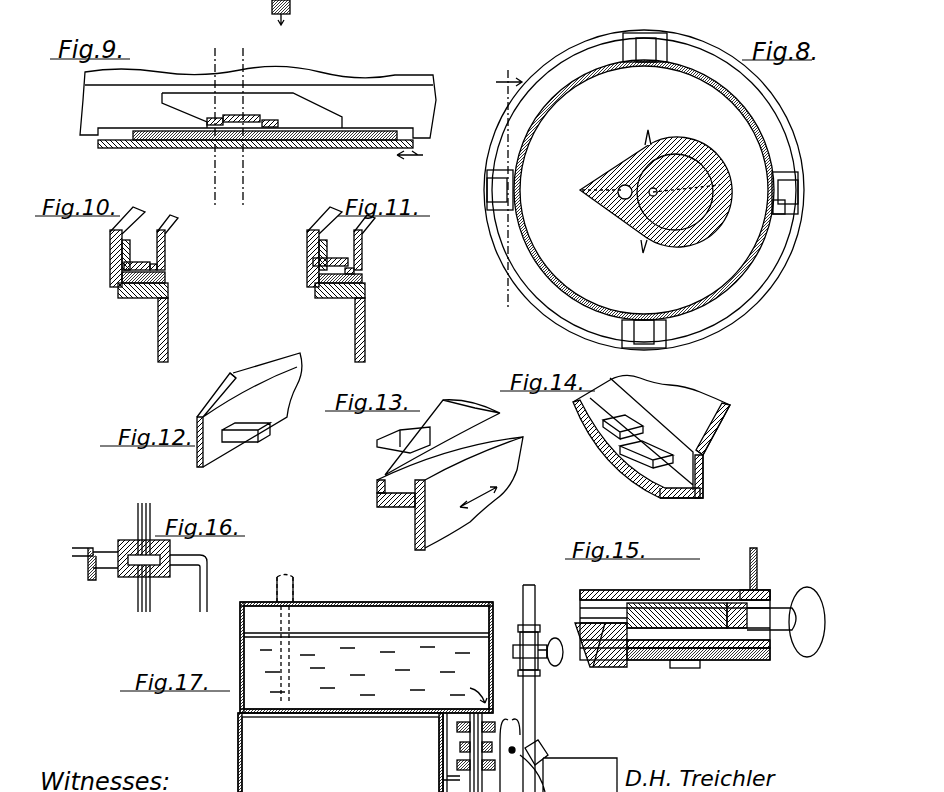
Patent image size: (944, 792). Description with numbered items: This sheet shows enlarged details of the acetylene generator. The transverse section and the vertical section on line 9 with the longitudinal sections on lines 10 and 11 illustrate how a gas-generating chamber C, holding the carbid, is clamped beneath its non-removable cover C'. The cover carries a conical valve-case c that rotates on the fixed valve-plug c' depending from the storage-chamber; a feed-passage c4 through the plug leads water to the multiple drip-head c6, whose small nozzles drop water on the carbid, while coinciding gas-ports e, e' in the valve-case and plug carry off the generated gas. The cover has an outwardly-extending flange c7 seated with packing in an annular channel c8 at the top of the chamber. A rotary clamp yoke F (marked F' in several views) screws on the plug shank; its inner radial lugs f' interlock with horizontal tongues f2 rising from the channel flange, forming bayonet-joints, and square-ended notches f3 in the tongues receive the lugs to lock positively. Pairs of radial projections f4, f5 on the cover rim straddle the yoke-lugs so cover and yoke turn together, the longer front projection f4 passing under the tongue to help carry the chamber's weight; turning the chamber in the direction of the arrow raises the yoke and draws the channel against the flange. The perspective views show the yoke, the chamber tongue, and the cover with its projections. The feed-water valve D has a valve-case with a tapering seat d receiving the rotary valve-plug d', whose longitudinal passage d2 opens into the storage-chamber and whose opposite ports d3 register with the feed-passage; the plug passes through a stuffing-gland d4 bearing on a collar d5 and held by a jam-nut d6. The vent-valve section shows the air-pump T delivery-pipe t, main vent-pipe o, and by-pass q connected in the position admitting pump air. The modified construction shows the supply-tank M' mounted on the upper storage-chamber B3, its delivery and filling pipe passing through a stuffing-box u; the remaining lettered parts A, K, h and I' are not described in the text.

In FIG. 8, the casing F' is at (644, 188).
In FIG. 9, the casing F' is at (258, 91).
In FIG. 10, the casing F' is at (135, 240).
In FIG. 12, the casing F' is at (249, 407).
In FIG. 11, the rotary clamp yoke F is at (321, 240).
In FIG. 8, the outwardly-extending flange c7 is at (765, 115).
In FIG. 9, the outwardly-extending flange c7 is at (370, 135).
In FIG. 10, the outwardly-extending flange c7 is at (167, 277).
In FIG. 11, the outwardly-extending flange c7 is at (364, 277).
In FIG. 14, the outwardly-extending flange c7 is at (705, 495).
In FIG. 9, the annular channel c8 is at (298, 150).
In FIG. 10, the annular channel c8 is at (142, 298).
In FIG. 11, the annular channel c8 is at (340, 298).
In FIG. 13, the annular channel c8 is at (400, 507).
In FIG. 8, the radial projection f4 is at (790, 176).
In FIG. 9, the radial projection f4 is at (212, 118).
In FIG. 10, the radial projection f4 is at (165, 266).
In FIG. 14, the radial projection f4 is at (655, 452).
In FIG. 8, the radial lug f' is at (801, 193).
In FIG. 9, the radial lug f' is at (246, 107).
In FIG. 10, the radial lug f' is at (137, 249).
In FIG. 11, the radial lug f' is at (315, 263).
In FIG. 12, the radial lug f' is at (246, 443).
In FIG. 8, the horizontal tongue f2 is at (780, 205).
In FIG. 9, the horizontal tongue f2 is at (293, 93).
In FIG. 10, the horizontal tongue f2 is at (128, 245).
In FIG. 11, the horizontal tongue f2 is at (325, 245).
In FIG. 13, the horizontal tongue f2 is at (443, 400).
In FIG. 8, the radial projection f5 is at (788, 240).
In FIG. 9, the radial projection f5 is at (272, 120).
In FIG. 11, the radial projection f5 is at (362, 270).
In FIG. 14, the radial projection f5 is at (630, 425).
In FIG. 13, the square-ended notch f3 is at (390, 432).
In FIG. 8, the section line 9 is at (508, 300).
In FIG. 9, the section line 10 is at (210, 124).
In FIG. 9, the section line 11 is at (242, 124).
In FIG. 8, the conical valve-case c is at (656, 190).
In FIG. 8, the fixed valve-plug c' is at (646, 169).
In FIG. 8, the feed-passage c4 is at (660, 190).
In FIG. 15, the feed-passage c4 is at (598, 667).
In FIG. 8, the multiple drip-head c6 is at (647, 245).
In FIG. 8, the gas-port e is at (606, 176).
In FIG. 8, the gas-port e' is at (665, 164).
In FIG. 10, the gas-generating chamber C is at (170, 330).
In FIG. 11, the gas-generating chamber C is at (367, 330).
In FIG. 13, the gas-generating chamber C is at (469, 493).
In FIG. 10, the cover C' is at (176, 242).
In FIG. 11, the cover C' is at (373, 242).
In FIG. 14, the cover C' is at (661, 436).
In FIG. 15, the feed-water valve D is at (675, 603).
In FIG. 15, the tapering seat d is at (577, 585).
In FIG. 15, the port d3 is at (610, 605).
In FIG. 15, the rotary valve-plug d' is at (687, 599).
In FIG. 15, the collar d5 is at (730, 603).
In FIG. 15, the stuffing-gland d4 is at (780, 600).
In FIG. 15, the longitudinal passage d2 is at (600, 612).
In FIG. 15, the jam-nut d6 is at (762, 655).
In FIG. 16, the main vent-pipe o is at (134, 558).
In FIG. 16, the delivery-pipe t is at (120, 555).
In FIG. 16, the air-pump T is at (85, 561).
In FIG. 16, the by-pass q is at (188, 583).
In FIG. 17, the tank A is at (204, 753).
In FIG. 17, the main water-supply tank M' is at (366, 639).
In FIG. 17, the upper storage-chamber B3 is at (255, 743).
In FIG. 17, the stuffing-box u is at (469, 752).
In FIG. 17, the pipe K is at (520, 600).
In FIG. 17, the lever h is at (510, 722).
In FIG. 17, the bracket I' is at (568, 764).